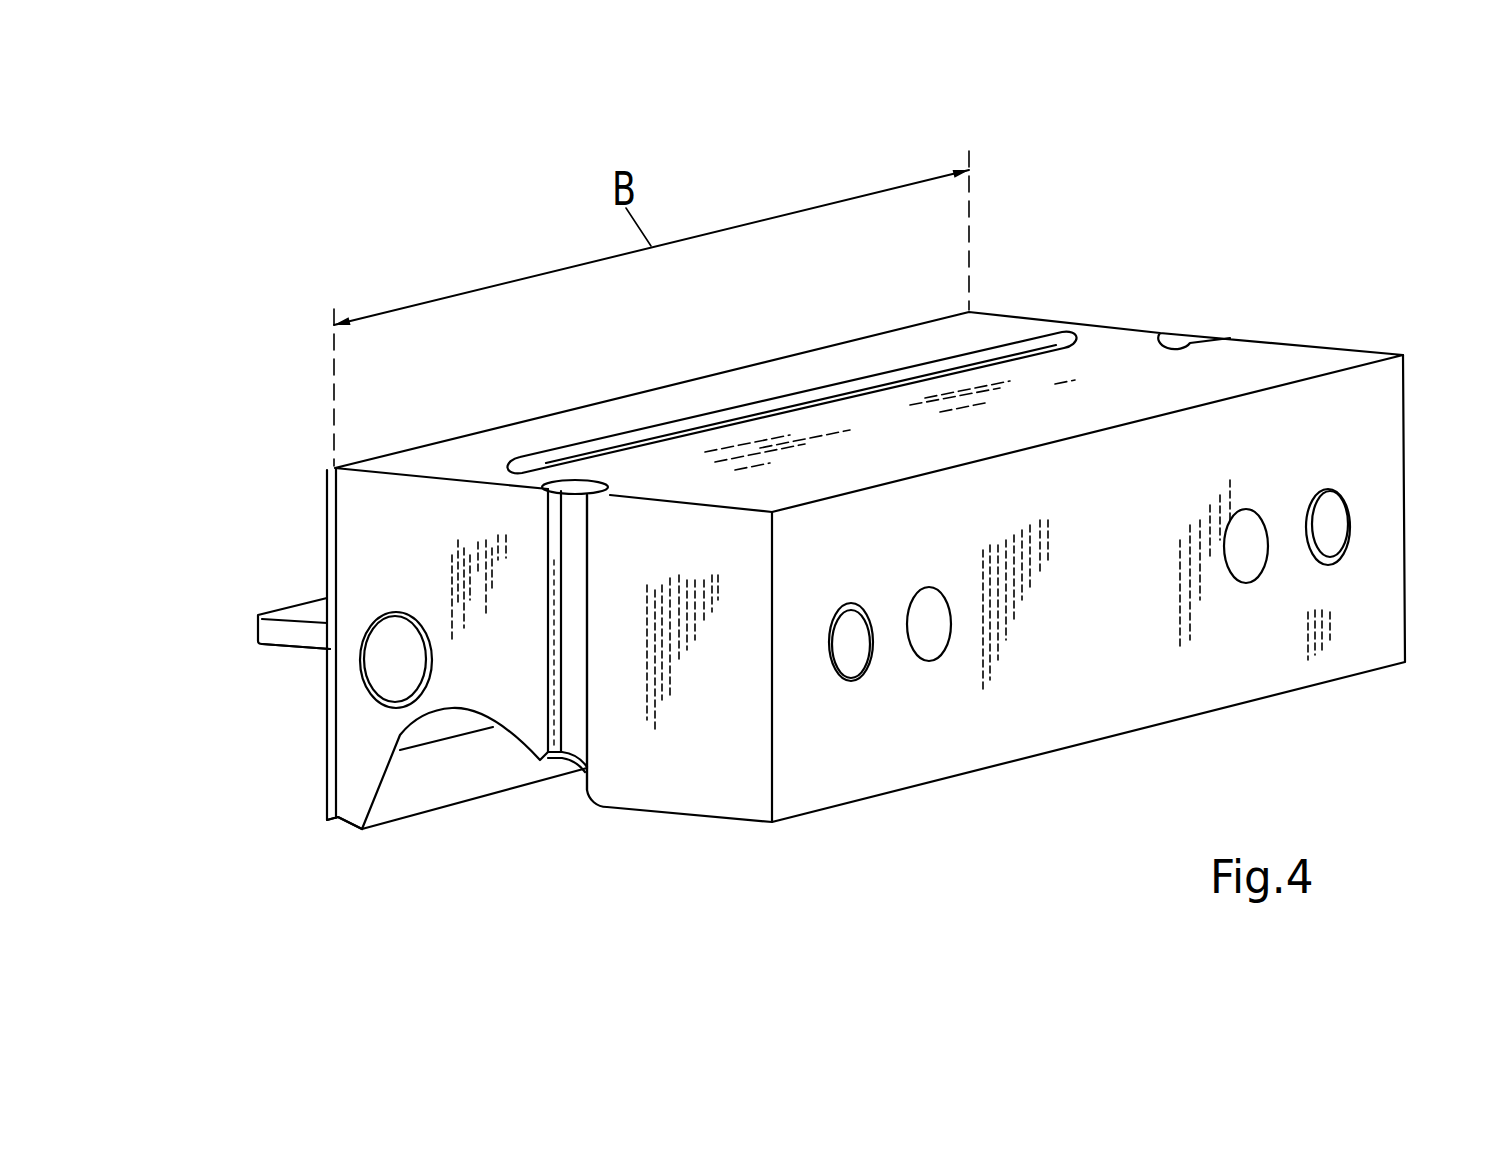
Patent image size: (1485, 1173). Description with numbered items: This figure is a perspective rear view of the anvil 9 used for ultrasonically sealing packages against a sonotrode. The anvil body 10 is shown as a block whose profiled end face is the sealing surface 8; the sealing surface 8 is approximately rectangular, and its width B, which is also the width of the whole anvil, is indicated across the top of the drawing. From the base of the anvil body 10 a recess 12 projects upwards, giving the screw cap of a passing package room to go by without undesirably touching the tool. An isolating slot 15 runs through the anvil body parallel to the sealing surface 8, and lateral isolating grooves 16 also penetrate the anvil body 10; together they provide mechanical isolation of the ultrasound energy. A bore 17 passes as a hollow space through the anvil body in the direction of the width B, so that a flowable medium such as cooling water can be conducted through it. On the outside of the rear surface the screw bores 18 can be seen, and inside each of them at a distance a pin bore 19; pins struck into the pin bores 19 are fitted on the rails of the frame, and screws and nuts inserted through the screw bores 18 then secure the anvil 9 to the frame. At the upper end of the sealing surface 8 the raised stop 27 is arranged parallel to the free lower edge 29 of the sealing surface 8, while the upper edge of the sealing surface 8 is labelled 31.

The sealing surface 8 is at (323, 780).
The anvil 9 is at (1292, 363).
The anvil body 10 is at (826, 571).
The recess 12 is at (450, 723).
The isolating slot 15 is at (1015, 355).
The lateral isolating grooves 16 is at (572, 710).
The bore 17 is at (387, 673).
The screw bores 18 is at (848, 655).
The pin bore 19 is at (925, 642).
The stop 27 is at (272, 628).
The free edge 29 is at (323, 823).
The upper edge of the sealing surface 31 is at (325, 655).